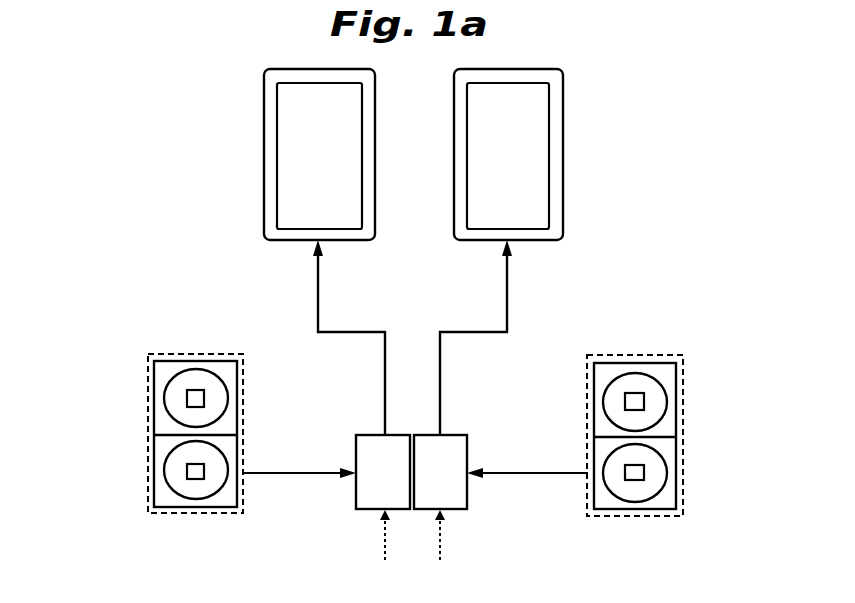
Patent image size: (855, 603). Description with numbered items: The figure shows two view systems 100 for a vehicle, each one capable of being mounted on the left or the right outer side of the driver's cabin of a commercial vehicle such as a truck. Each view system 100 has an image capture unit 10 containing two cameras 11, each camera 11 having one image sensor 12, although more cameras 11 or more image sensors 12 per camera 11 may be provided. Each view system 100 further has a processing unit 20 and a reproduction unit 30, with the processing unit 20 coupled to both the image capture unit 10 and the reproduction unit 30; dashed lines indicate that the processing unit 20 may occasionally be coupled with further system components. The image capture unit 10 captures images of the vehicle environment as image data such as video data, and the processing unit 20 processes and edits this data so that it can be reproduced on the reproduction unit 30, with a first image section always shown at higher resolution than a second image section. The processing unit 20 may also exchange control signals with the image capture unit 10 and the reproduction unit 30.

The view system 100 is at (214, 314).
The image capture unit 10 is at (148, 395).
The camera 11 is at (165, 445).
The image sensor 12 is at (183, 475).
The processing unit 20 is at (392, 469).
The reproduction unit 30 is at (264, 170).